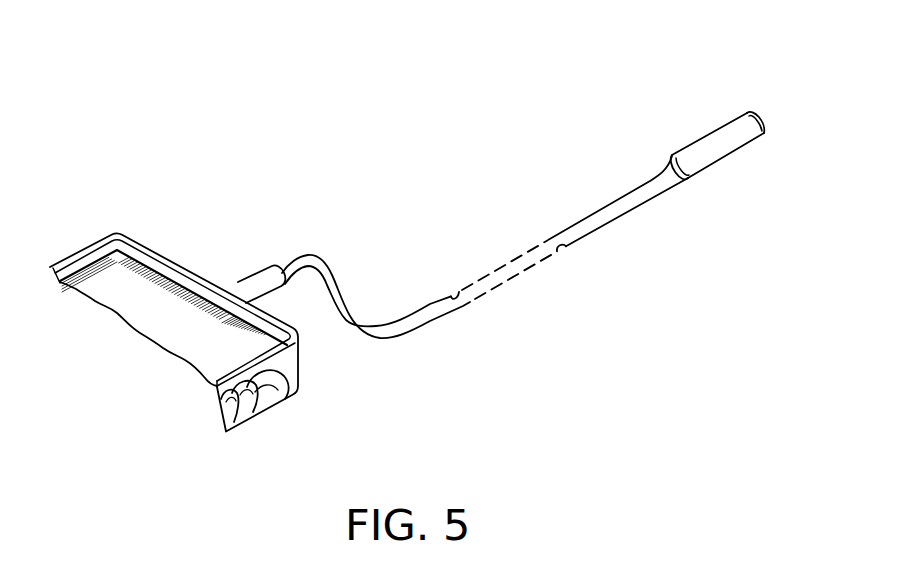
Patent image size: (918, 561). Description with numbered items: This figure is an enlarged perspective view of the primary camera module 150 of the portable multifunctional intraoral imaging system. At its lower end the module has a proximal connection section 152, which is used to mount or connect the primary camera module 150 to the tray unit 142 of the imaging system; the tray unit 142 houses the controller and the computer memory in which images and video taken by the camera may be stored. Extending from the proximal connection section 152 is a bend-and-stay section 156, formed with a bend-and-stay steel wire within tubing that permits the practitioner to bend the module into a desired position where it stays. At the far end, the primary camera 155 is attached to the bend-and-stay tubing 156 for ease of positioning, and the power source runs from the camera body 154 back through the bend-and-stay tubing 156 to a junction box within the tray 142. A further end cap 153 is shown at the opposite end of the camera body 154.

The tray unit 142 is at (291, 363).
The primary camera module 150 is at (594, 213).
The proximal connection section 152 is at (255, 274).
The end cap 153 is at (689, 180).
The camera body 154 is at (710, 134).
The primary camera 155 is at (765, 122).
The bend-and-stay section 156 is at (390, 338).